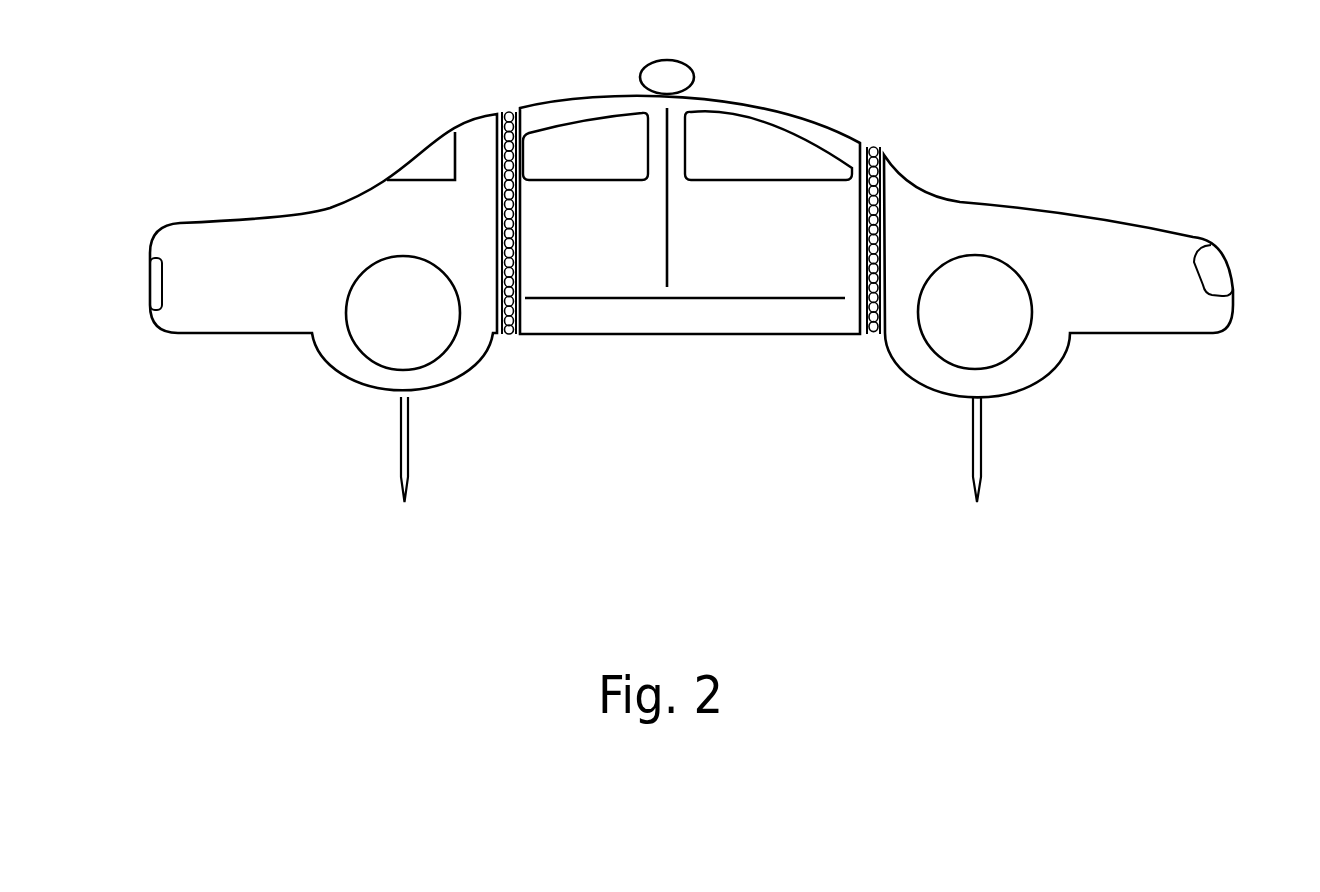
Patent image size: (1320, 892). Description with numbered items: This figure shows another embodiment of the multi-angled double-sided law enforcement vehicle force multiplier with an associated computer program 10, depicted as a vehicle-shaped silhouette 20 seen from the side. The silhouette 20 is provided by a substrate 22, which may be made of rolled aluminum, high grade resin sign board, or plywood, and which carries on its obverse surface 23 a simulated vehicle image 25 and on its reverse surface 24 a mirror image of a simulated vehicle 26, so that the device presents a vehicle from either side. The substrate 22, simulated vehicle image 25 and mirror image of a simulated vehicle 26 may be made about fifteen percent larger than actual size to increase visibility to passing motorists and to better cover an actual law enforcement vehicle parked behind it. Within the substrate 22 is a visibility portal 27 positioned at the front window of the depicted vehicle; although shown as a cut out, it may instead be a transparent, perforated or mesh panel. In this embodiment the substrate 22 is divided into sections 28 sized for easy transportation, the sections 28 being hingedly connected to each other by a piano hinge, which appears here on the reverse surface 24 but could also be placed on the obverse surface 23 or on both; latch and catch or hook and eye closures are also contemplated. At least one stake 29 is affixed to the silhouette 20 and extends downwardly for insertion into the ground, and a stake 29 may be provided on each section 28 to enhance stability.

The multi-angled double-sided law enforcement vehicle force multiplier with an assoc 10 is at (703, 278).
The silhouette 20 is at (1229, 335).
The substrate 22 is at (168, 249).
The obverse surface 23 is at (560, 93).
The reverse surface 24 is at (737, 298).
The simulated vehicle image 25 is at (843, 121).
The mirror image of a simulated vehicle 26 is at (1002, 218).
The visibility portal 27 is at (765, 143).
The sections 28 is at (237, 322).
The stake 29 is at (400, 476).